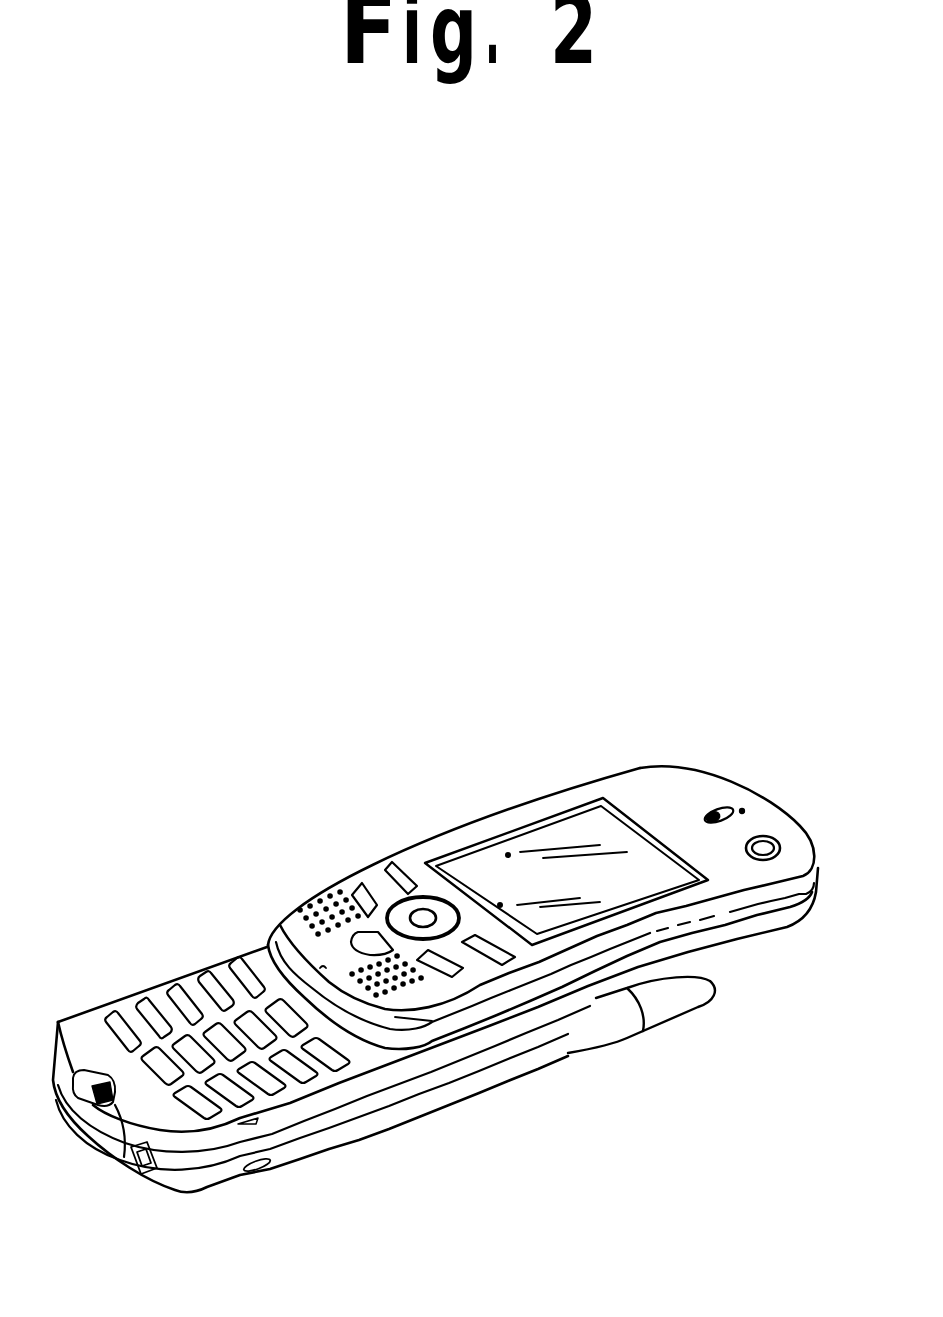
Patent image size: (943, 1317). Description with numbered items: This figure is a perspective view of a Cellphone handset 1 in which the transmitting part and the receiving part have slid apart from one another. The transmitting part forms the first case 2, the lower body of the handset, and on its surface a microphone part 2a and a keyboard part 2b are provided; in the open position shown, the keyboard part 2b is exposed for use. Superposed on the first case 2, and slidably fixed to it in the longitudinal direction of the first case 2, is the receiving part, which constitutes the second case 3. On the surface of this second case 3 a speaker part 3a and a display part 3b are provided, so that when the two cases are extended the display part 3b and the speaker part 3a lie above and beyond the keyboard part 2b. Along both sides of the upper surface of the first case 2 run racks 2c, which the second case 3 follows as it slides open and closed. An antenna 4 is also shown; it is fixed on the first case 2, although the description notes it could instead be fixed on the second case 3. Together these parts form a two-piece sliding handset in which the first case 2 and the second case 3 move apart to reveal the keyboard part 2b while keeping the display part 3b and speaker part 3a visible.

The Cellphone handset 1 is at (530, 758).
The first case 2 is at (411, 1127).
The microphone part 2a is at (103, 1098).
The keyboard part 2b is at (298, 1093).
The rack 2c is at (431, 1062).
The second case 3 is at (706, 768).
The speaker part 3a is at (720, 803).
The display part 3b is at (497, 862).
The antenna 4 is at (678, 1002).